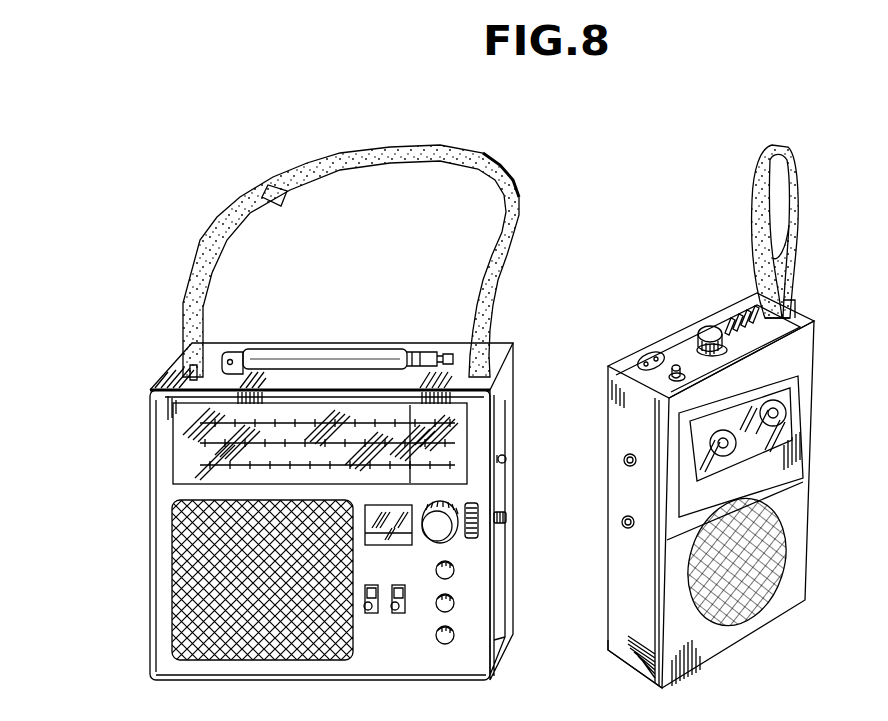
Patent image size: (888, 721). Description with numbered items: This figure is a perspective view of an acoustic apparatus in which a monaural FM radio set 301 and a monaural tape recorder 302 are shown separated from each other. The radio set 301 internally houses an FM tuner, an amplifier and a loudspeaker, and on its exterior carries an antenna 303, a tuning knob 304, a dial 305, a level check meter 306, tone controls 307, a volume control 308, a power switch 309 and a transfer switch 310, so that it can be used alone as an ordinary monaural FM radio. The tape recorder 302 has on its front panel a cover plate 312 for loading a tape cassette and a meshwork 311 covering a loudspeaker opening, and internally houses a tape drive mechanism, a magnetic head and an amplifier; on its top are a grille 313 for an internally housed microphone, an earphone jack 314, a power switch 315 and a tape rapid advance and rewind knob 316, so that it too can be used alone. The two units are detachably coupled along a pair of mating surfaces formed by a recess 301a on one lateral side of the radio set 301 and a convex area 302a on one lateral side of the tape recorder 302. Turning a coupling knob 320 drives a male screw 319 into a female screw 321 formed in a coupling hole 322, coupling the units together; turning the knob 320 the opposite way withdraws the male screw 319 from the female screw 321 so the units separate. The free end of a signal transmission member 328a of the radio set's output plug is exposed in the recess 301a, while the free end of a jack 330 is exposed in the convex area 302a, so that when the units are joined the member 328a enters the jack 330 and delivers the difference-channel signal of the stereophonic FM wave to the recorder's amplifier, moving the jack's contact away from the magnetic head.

The monaural FM radio set 301 is at (360, 326).
The recess 301a is at (497, 650).
The monaural tape recorder 302 is at (709, 306).
The convex area 302a is at (633, 655).
The antenna 303 is at (284, 351).
The tuning knob 304 is at (455, 535).
The dial 305 is at (175, 429).
The level check meter 306 is at (417, 534).
The tone controls 307 is at (453, 573).
The volume control 308 is at (445, 645).
The power switch 309 is at (397, 607).
The transfer switch 310 is at (371, 607).
The meshwork 311 is at (774, 592).
The cover plate 312 is at (793, 398).
The grille 313 is at (737, 314).
The earphone jack 314 is at (645, 355).
The power switch 315 is at (681, 370).
The tape rapid advance and rewind knob 316 is at (707, 330).
The male screw 319 is at (507, 518).
The coupling knob 320 is at (478, 525).
The female screw 321 is at (620, 523).
The coupling hole 322 is at (624, 529).
The signal transmission member 328a is at (502, 457).
The jack 330 is at (622, 459).